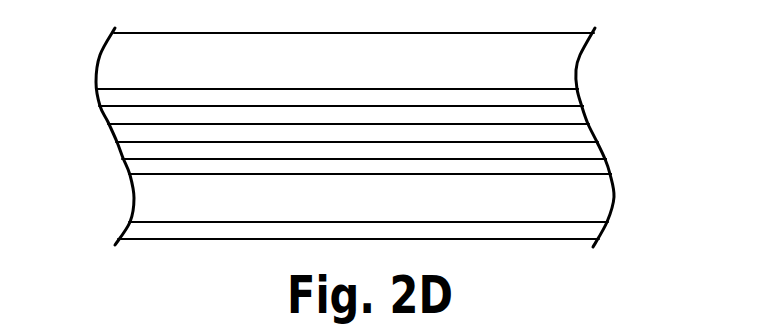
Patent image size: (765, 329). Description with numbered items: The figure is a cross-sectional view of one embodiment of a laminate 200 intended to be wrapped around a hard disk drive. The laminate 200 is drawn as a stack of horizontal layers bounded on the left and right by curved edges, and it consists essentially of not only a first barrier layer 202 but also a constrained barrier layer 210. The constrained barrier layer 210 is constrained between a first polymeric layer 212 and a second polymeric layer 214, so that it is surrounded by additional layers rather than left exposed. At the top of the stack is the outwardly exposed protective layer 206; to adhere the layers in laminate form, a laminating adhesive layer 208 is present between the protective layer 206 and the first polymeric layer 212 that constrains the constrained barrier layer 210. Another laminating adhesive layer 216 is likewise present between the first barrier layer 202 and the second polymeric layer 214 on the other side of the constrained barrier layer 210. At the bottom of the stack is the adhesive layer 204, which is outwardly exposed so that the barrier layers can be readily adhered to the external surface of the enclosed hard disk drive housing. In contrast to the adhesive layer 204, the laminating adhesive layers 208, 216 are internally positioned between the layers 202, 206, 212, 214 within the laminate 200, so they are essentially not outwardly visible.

The laminate 200 is at (642, 119).
The first barrier layer 202 is at (150, 201).
The adhesive layer 204 is at (162, 230).
The outwardly exposed protective layer 206 is at (108, 65).
The laminating adhesive layer 208 is at (566, 95).
The constrained barrier layer 210 is at (125, 136).
The first polymeric layer 212 is at (115, 118).
The second polymeric layer 214 is at (127, 154).
The laminating adhesive layer 216 is at (590, 169).